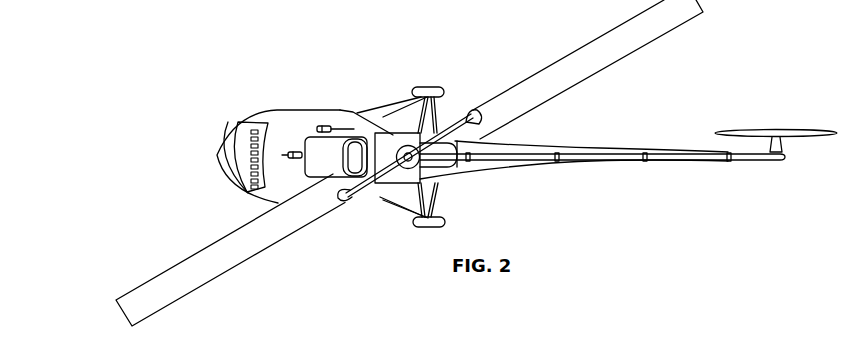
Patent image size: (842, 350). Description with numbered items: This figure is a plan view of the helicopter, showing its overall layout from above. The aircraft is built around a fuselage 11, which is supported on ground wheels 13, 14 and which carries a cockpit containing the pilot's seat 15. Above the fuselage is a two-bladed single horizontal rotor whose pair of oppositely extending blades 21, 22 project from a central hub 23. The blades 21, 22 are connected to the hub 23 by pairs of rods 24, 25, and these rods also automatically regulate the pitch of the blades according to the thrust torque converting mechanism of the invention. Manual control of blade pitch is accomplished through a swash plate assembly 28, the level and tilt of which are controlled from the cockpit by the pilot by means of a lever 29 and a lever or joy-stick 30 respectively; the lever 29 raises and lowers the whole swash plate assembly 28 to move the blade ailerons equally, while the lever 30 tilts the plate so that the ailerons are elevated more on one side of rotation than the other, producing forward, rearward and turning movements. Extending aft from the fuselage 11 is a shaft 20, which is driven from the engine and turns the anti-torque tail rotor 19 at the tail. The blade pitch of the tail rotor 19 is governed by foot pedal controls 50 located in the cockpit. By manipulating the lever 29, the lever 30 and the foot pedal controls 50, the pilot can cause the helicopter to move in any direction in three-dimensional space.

The fuselage 11 is at (465, 167).
The ground wheel 13 is at (427, 92).
The ground wheel 14 is at (438, 224).
The pilot's seat 15 is at (334, 165).
The anti-torque tail rotor 19 is at (741, 133).
The shaft 20 is at (511, 160).
The blade 21 is at (243, 257).
The blade 22 is at (600, 68).
The hub 23 is at (382, 199).
The rods 24 is at (362, 187).
The rods 25 is at (463, 119).
The swash plate assembly 28 is at (419, 166).
The manual lever 29 is at (322, 125).
The manual lever or joy-stick 30 is at (290, 150).
The foot pedal controls 50 is at (252, 122).